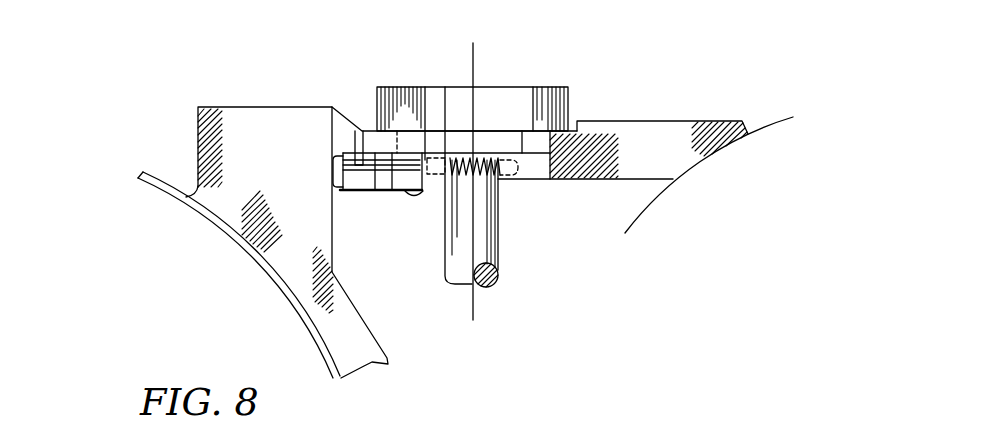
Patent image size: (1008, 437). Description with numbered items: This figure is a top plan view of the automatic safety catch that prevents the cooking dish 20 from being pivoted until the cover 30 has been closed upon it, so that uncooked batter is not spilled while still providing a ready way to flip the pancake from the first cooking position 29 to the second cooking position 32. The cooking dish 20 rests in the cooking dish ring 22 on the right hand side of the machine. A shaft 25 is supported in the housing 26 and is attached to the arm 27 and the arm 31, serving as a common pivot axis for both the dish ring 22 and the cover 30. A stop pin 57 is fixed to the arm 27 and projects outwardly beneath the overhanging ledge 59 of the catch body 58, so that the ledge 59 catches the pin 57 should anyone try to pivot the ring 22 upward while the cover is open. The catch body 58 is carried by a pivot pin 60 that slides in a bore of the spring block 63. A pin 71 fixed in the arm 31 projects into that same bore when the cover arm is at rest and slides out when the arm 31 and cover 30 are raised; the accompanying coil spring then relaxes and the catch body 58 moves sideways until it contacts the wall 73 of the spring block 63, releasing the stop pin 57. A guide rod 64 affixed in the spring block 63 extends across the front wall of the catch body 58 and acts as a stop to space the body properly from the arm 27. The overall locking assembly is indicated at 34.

The cooking dish 20 is at (248, 252).
The cooking dish ring 22 is at (215, 137).
The shaft 25 is at (489, 287).
The housing 26 is at (522, 103).
The arm 27 is at (380, 143).
The first cooking position 29 is at (58, 205).
The cover 30 is at (778, 160).
The arm 31 is at (618, 143).
The second cooking position 32 is at (855, 135).
The locking assembly 34 is at (394, 253).
The stop pin 57 is at (362, 130).
The catch body 58 is at (342, 188).
The overhanging ledge 59 is at (353, 152).
The pivot pin / wire spring 60 is at (357, 193).
The spring block 63 is at (435, 182).
The guide rod 64 is at (388, 192).
The pin 71 is at (517, 171).
The wall 73 is at (387, 148).